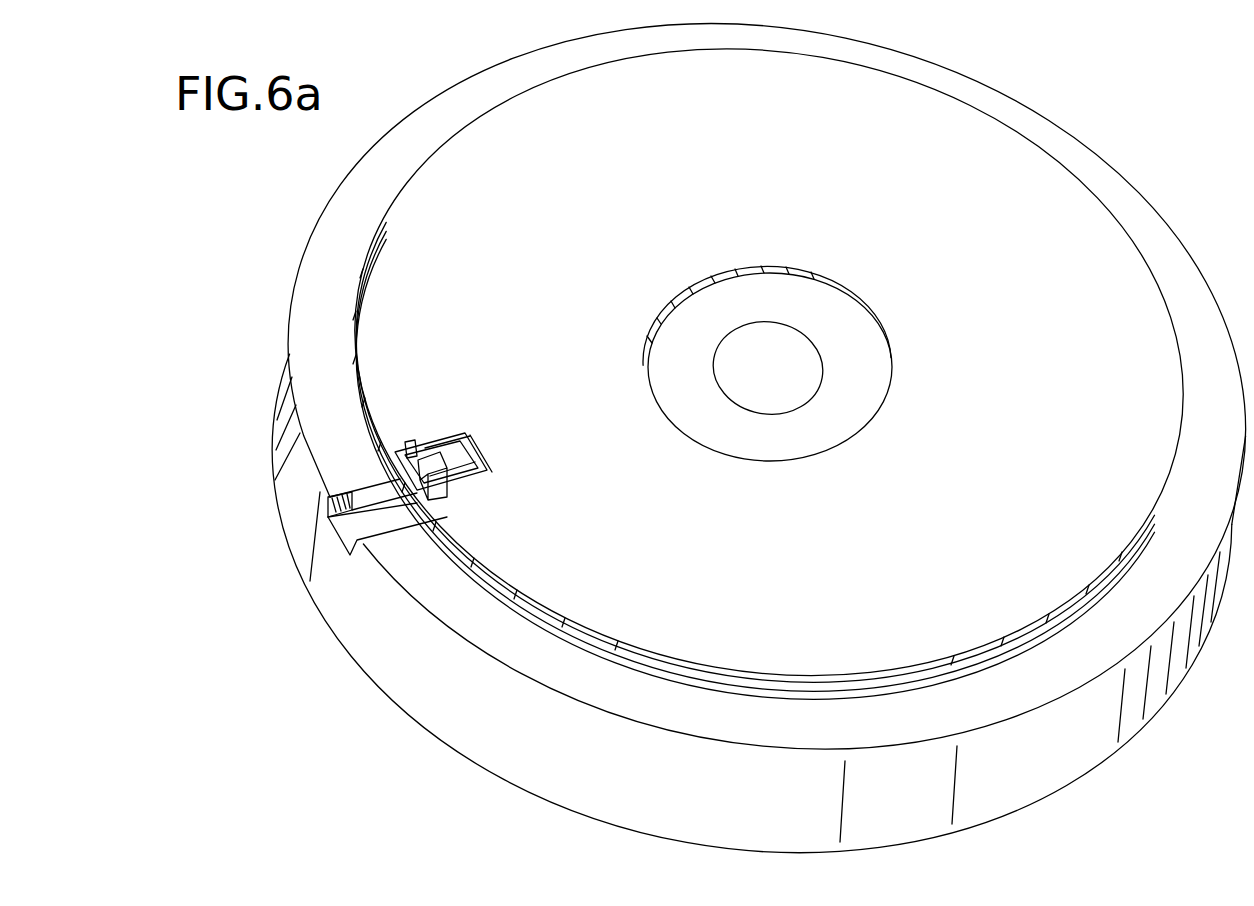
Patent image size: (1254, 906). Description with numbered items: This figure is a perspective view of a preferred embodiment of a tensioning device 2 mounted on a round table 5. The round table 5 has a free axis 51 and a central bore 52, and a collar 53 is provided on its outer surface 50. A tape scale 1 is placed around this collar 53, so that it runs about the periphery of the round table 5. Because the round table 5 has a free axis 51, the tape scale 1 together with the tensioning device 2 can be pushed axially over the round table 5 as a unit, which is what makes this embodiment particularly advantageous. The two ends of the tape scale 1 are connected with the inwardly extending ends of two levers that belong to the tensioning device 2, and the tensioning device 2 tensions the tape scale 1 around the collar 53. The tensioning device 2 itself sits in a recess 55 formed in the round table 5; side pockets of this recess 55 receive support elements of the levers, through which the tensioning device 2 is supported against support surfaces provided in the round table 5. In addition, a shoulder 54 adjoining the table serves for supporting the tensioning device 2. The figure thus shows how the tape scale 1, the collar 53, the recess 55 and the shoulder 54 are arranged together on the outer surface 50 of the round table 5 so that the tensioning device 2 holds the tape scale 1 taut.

The tape scale 1 is at (882, 690).
The tensioning device 2 is at (449, 450).
The round table 5 is at (1037, 205).
The outer surface 50 is at (1057, 737).
The free axis 51 is at (765, 368).
The central bore 52 is at (810, 375).
The collar 53 is at (542, 600).
The shoulder 54 is at (590, 690).
The recess 55 is at (474, 447).